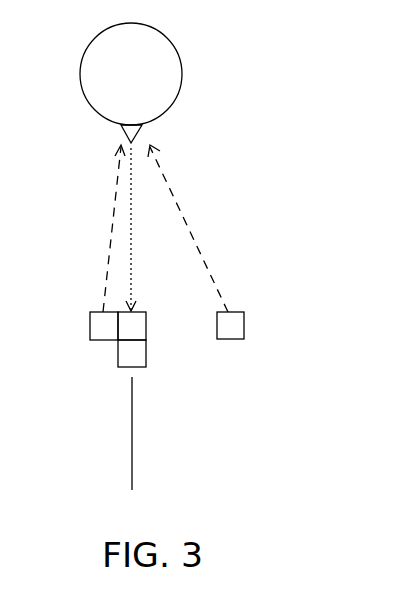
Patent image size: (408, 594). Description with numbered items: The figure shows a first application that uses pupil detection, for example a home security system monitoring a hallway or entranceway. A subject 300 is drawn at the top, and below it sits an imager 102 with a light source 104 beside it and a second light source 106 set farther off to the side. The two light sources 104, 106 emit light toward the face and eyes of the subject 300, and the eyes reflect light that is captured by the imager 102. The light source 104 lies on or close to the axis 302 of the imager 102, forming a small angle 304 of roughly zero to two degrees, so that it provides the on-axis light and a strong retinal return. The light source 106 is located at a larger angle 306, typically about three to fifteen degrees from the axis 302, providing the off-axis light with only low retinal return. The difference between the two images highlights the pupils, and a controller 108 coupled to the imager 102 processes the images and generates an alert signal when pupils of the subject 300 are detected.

The subject 300 is at (182, 77).
The axis 302 is at (132, 453).
The angle 304 is at (118, 193).
The angle 306 is at (160, 190).
The imager 102 is at (146, 327).
The light source 104 is at (90, 327).
The light source 106 is at (244, 327).
The controller 108 is at (117, 352).